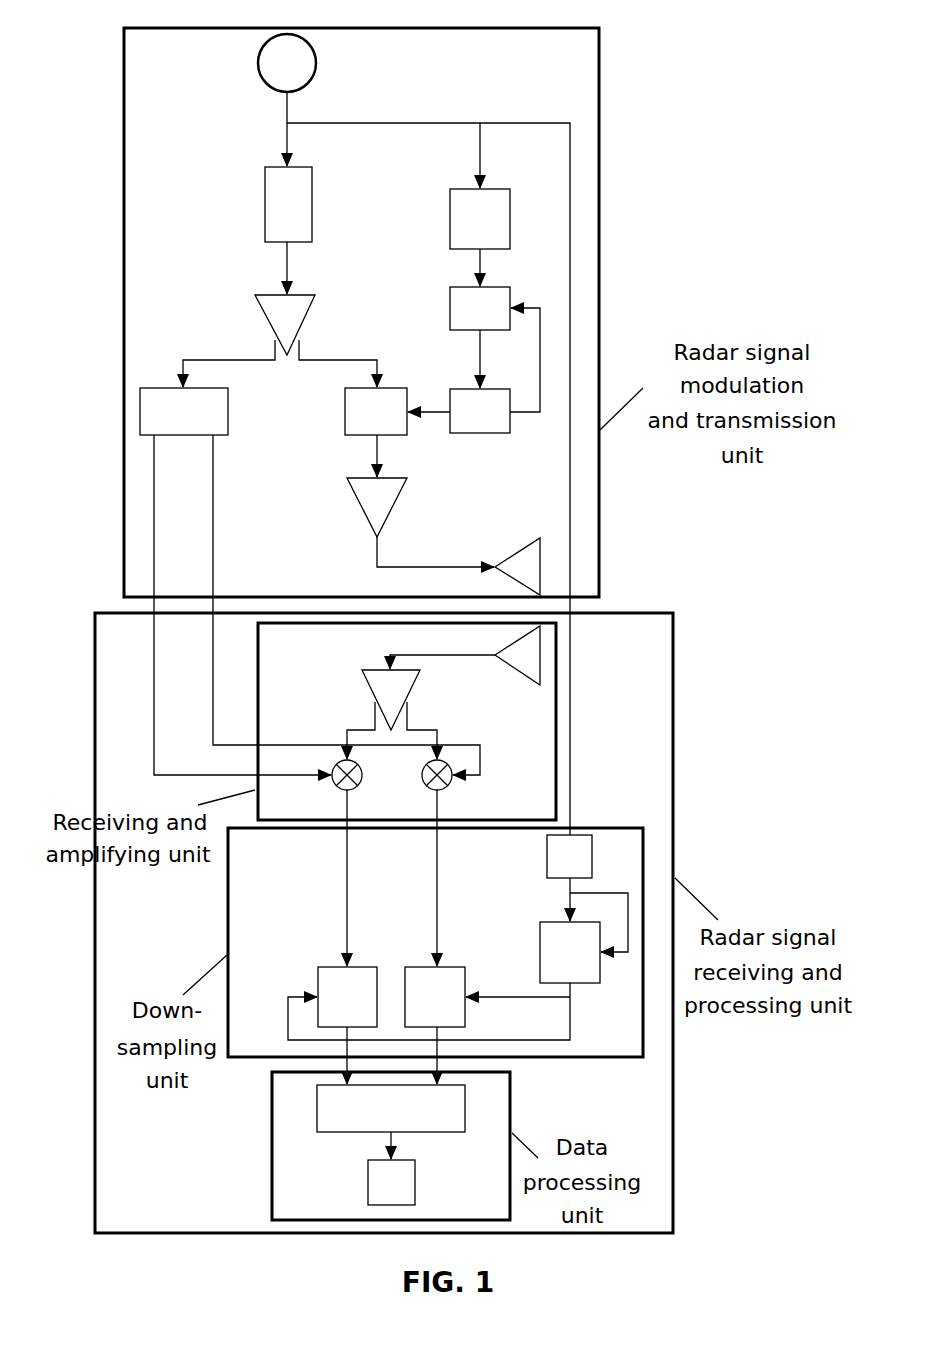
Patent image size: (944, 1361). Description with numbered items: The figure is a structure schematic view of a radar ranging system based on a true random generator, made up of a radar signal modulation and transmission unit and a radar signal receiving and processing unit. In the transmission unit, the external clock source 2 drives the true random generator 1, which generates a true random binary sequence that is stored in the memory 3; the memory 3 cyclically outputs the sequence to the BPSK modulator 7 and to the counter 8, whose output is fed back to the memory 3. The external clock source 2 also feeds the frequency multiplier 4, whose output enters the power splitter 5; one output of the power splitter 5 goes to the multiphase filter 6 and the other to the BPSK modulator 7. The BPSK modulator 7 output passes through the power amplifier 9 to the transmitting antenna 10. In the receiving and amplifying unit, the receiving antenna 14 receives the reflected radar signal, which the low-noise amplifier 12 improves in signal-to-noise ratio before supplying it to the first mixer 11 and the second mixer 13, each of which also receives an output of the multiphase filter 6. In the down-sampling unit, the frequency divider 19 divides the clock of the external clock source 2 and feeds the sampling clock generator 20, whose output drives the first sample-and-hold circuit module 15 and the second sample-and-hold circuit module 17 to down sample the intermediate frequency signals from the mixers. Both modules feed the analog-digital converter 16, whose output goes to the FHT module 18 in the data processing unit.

The true random generator 1 is at (480, 219).
The external clock source 2 is at (287, 63).
The memory 3 is at (480, 308).
The frequency multiplier 4 is at (288, 204).
The power splitter 5 is at (285, 325).
The multiphase filter 6 is at (184, 411).
The BPSK modulator 7 is at (376, 411).
The counter 8 is at (480, 411).
The power amplifier 9 is at (377, 507).
The transmitting antenna 10 is at (517, 566).
The first mixer 11 is at (337, 783).
The low-noise amplifier 12 is at (391, 700).
The second mixer 13 is at (440, 787).
The receiving antenna 14 is at (517, 655).
The first sample-and-hold circuit module 15 is at (347, 997).
The analog-digital converter 16 is at (391, 1108).
The second sample-and-hold circuit module 17 is at (435, 997).
The FHT module 18 is at (391, 1182).
The frequency divider 19 is at (569, 856).
The sampling clock generator 20 is at (570, 952).